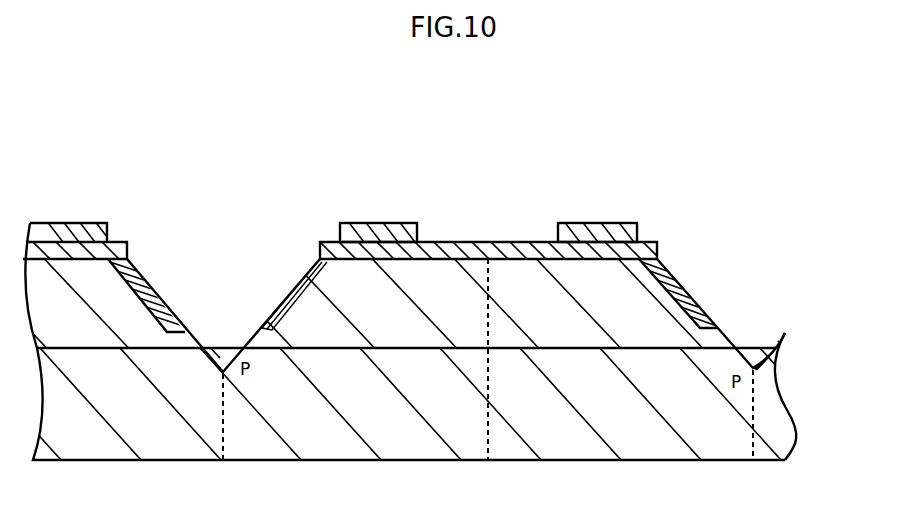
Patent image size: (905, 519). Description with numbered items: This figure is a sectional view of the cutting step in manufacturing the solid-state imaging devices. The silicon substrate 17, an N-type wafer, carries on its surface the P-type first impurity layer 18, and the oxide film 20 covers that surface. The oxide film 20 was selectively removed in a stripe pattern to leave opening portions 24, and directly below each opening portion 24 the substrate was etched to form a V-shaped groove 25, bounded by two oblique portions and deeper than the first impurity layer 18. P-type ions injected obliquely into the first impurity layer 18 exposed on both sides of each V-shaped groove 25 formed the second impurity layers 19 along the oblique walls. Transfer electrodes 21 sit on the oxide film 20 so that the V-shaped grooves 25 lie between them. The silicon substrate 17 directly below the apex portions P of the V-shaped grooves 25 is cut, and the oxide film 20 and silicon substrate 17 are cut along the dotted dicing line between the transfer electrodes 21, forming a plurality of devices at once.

The silicon substrate 17 is at (782, 411).
The first impurity layer 18 is at (662, 335).
The second impurity layer 19 is at (144, 272).
The oxide film 20 is at (505, 248).
The transfer electrode 21 is at (86, 222).
The opening portion 24 is at (277, 250).
The V-shaped groove 25 is at (217, 312).